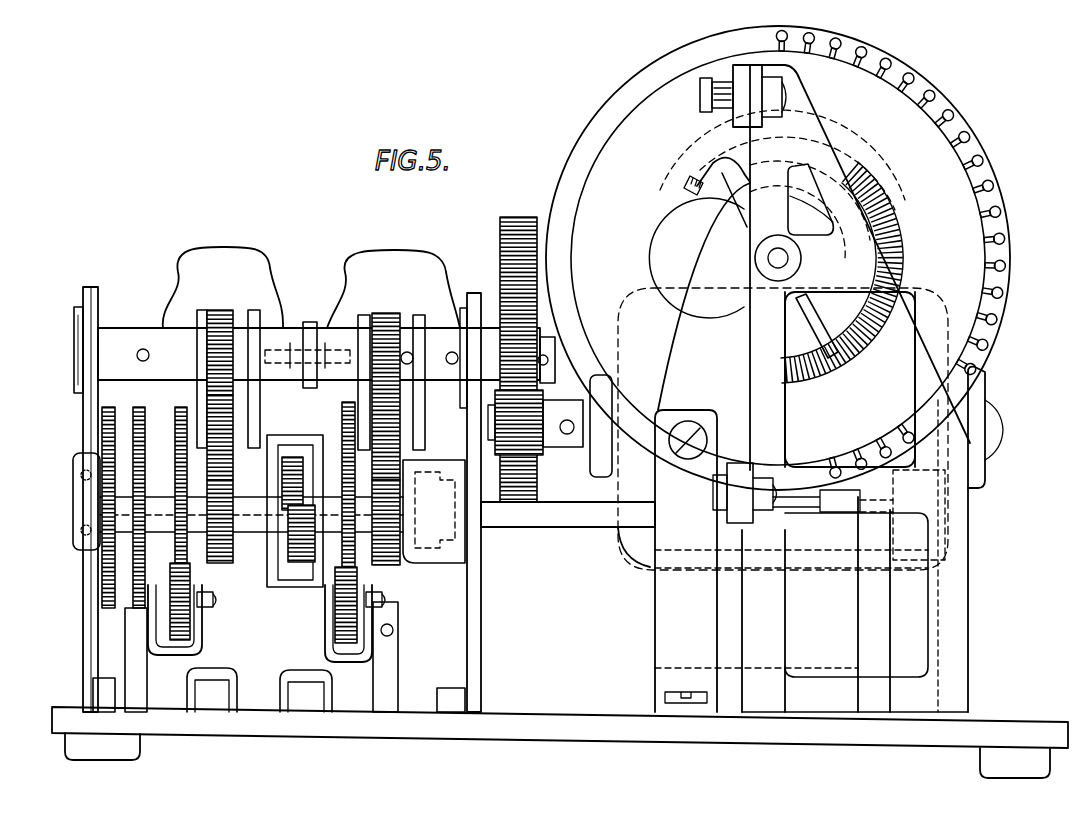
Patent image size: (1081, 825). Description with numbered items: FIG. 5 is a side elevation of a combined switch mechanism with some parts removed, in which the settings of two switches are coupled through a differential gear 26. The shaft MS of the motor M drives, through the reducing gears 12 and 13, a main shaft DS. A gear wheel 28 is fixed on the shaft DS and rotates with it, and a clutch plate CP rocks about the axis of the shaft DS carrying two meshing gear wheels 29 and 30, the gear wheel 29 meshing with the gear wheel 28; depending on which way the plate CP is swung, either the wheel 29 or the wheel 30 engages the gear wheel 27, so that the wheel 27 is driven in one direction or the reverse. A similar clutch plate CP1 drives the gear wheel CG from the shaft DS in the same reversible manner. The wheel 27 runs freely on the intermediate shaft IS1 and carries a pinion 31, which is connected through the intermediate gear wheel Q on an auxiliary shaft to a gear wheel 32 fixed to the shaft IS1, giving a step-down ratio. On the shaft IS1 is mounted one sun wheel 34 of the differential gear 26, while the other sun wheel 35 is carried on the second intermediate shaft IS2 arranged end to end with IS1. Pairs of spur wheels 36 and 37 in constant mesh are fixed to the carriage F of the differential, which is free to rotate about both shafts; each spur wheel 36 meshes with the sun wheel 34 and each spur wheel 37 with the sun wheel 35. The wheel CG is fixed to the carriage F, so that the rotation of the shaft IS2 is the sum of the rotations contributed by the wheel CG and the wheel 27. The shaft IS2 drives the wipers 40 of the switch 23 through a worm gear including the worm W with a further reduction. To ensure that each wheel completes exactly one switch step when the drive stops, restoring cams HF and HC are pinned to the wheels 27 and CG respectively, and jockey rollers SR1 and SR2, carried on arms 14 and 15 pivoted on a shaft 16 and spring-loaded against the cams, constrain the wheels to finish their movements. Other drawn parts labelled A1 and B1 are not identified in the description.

The reducing gear 12 is at (550, 398).
The reducing gear 13 is at (518, 230).
The arm 14 is at (175, 632).
The arm 15 is at (346, 640).
The shaft 16 is at (260, 642).
The switch 23 is at (945, 217).
The differential gear 26 is at (340, 440).
The gear wheel 27 is at (222, 563).
The gear wheel 28 is at (221, 314).
The gear wheel 29 is at (238, 318).
The gear wheel 30 is at (227, 440).
The pinion 31 is at (168, 485).
The gear wheel 32 is at (108, 447).
The sun wheel 34 is at (280, 520).
The sun wheel 35 is at (311, 504).
The spur wheels 36 is at (293, 457).
The spur wheels 37 is at (308, 560).
The wipers 40 is at (722, 163).
The clutch plate CP is at (197, 268).
The clutch plate CP1 is at (357, 276).
The gear A1 is at (385, 332).
The plate B1 is at (400, 350).
The main shaft DS is at (121, 336).
The intermediate gear wheel Q is at (108, 418).
The restoring cam HF is at (178, 420).
The carriage F is at (311, 440).
The gear wheel CG is at (397, 560).
The restoring cam HC is at (355, 558).
The jockey roller SR1 is at (178, 640).
The jockey roller SR2 is at (348, 645).
The intermediate shaft IS1 is at (85, 516).
The second intermediate shaft IS2 is at (527, 519).
The motor shaft MS is at (554, 445).
The motor M is at (647, 555).
The worm W is at (797, 553).